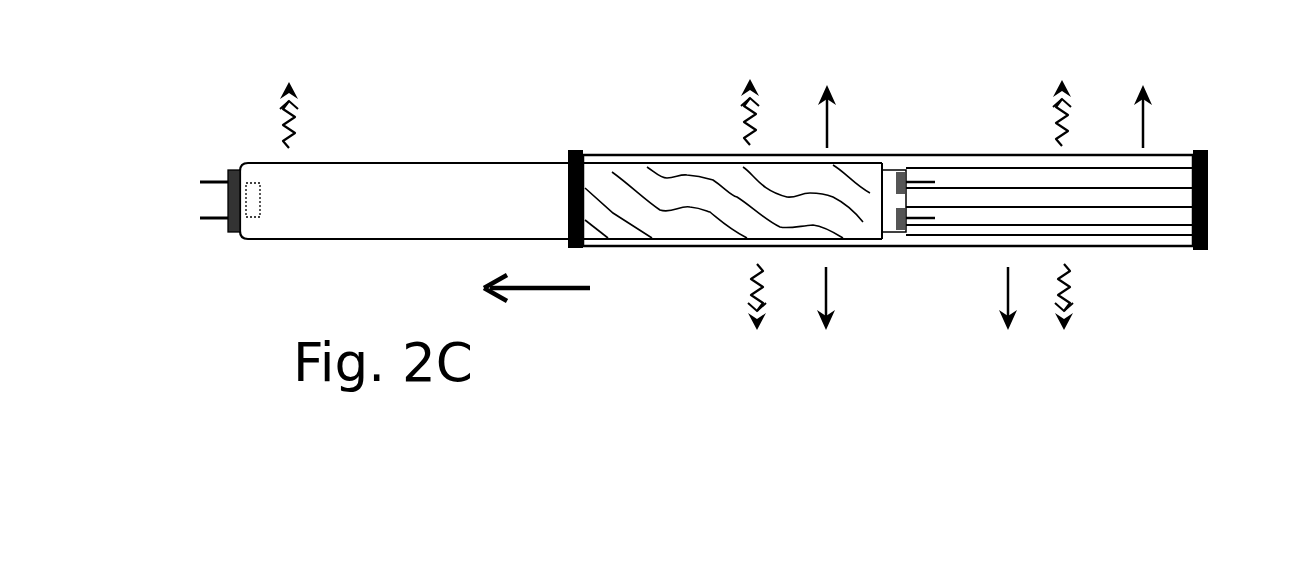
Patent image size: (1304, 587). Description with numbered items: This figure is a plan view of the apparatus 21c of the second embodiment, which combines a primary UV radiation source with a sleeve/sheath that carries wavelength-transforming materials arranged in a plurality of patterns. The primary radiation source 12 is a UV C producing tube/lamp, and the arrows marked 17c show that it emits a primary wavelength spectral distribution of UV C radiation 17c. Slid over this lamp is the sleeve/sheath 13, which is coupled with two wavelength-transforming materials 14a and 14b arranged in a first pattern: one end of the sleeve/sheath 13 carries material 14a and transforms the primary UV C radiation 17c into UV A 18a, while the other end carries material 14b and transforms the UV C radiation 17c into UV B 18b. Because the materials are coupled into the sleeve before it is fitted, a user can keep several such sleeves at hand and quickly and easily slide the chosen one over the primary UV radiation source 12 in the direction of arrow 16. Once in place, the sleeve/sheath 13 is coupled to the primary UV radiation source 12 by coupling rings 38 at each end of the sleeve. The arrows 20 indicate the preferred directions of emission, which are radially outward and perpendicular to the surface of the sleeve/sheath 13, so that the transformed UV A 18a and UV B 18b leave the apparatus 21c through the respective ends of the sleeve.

The primary radiation source 12 is at (447, 155).
The sleeve/sheath 13 is at (685, 150).
The wavelength-transforming material 14a is at (717, 222).
The wavelength-transforming material 14b is at (970, 215).
The arrow 16 is at (537, 277).
The UV C radiation 17c is at (290, 100).
The UV A 18a is at (756, 210).
The UV B 18b is at (1066, 207).
The arrows 20 is at (984, 210).
The apparatus 21c is at (1263, 233).
The coupling rings 38 is at (570, 148).